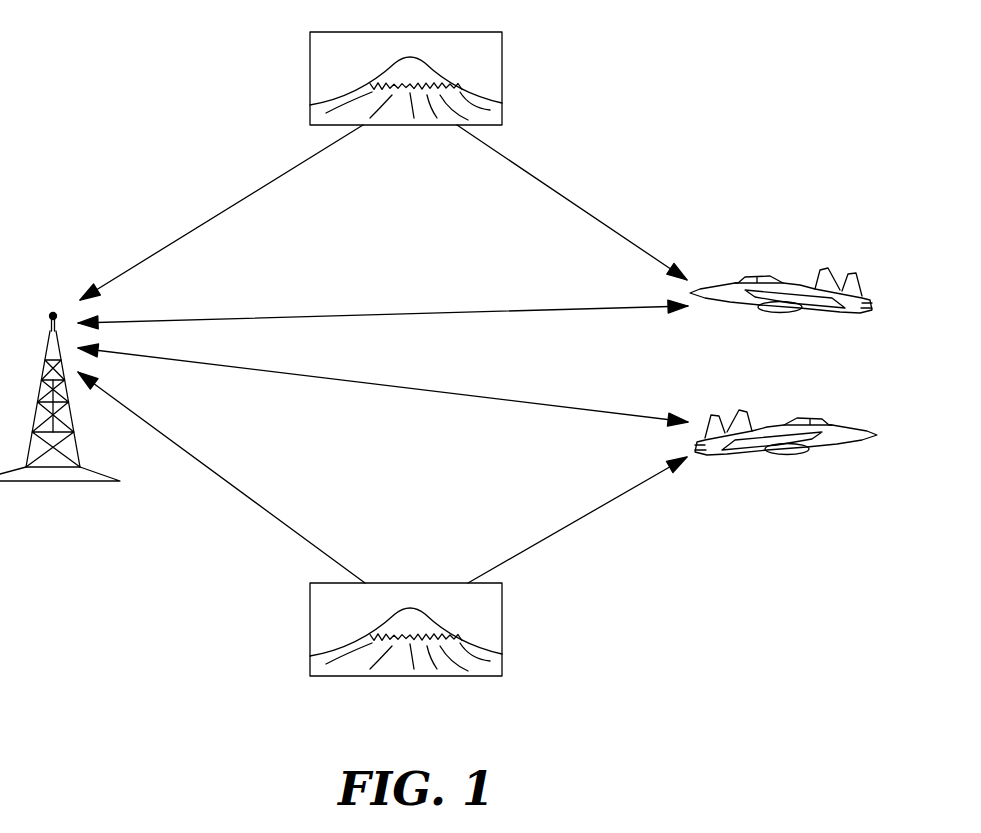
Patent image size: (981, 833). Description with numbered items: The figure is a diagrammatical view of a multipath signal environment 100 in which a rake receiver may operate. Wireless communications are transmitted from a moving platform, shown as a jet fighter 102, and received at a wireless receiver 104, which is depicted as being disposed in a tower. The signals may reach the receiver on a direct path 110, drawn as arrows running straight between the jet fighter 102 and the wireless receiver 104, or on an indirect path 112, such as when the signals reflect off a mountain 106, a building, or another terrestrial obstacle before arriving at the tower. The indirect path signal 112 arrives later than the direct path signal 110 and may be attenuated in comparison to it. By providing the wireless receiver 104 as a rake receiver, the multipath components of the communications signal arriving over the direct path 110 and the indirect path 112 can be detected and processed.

The communication system 100 is at (138, 98).
The jet fighter 102 is at (775, 272).
The wireless receiver 104 is at (78, 482).
The mountain 106 is at (502, 78).
The direct path 110 is at (532, 311).
The indirect path 112 is at (277, 180).